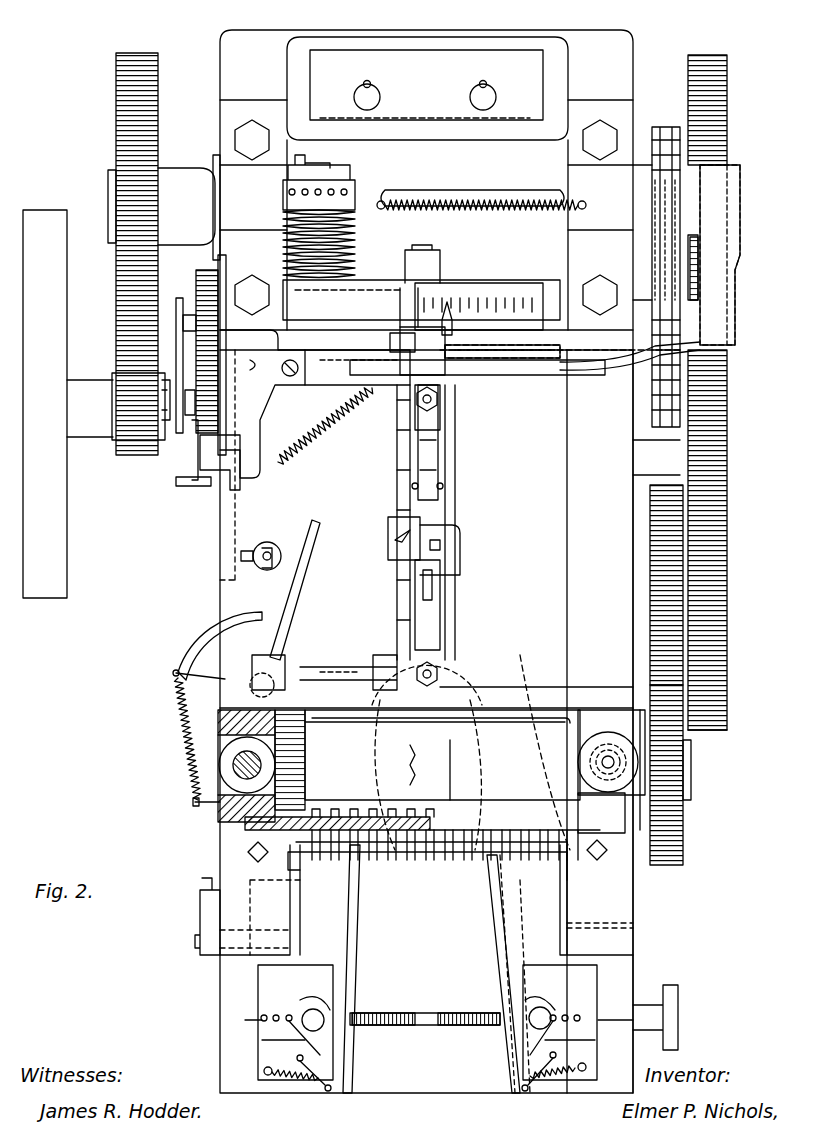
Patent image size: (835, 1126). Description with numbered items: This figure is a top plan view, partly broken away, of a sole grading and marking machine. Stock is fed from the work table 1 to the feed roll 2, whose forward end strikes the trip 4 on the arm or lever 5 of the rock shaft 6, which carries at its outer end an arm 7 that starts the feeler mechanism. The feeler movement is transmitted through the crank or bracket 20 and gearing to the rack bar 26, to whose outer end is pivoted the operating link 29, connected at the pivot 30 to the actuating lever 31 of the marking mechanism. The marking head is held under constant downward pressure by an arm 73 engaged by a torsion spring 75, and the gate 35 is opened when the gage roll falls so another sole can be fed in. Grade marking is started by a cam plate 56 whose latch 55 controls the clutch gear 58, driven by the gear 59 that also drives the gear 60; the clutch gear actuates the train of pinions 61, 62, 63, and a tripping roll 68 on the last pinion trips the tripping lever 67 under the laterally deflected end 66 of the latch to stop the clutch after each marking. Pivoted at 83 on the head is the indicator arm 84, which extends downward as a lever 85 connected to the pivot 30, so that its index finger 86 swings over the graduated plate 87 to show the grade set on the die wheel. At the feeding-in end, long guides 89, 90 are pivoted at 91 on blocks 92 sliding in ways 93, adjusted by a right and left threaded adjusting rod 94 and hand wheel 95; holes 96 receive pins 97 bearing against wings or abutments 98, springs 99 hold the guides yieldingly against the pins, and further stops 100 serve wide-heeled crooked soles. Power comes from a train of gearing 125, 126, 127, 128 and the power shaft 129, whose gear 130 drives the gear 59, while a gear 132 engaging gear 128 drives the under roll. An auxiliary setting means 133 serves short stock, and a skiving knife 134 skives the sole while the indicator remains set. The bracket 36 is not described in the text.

The work table 1 is at (426, 561).
The feed roll 2 is at (425, 757).
The trip 4 is at (424, 546).
The arm or lever 5 is at (398, 487).
The rock shaft 6 is at (327, 668).
The arm 7 is at (262, 595).
The crank or bracket 20 is at (355, 415).
The rack bar 26 is at (652, 240).
The operating link 29 is at (570, 362).
The pivot 30 is at (470, 378).
The actuating lever 31 is at (392, 345).
The gate 35 is at (575, 855).
The bracket 36 is at (248, 950).
The latch 55 is at (208, 490).
The cam plate 56 is at (225, 492).
The clutch gear 58 is at (192, 445).
The gear 59 is at (140, 450).
The gear 60 is at (118, 128).
The pinion 61 is at (200, 432).
The pinion 62 is at (195, 368).
The pinion 63 is at (198, 280).
The laterally deflected end 66 is at (190, 488).
The tripping lever 67 is at (178, 318).
The tripping roll 68 is at (222, 295).
The arm 73 is at (372, 275).
The torsion spring 75 is at (283, 222).
The pivot 83 is at (414, 388).
The indicator arm 84 is at (410, 325).
The lever 85 is at (488, 372).
The index finger 86 is at (450, 312).
The graduated plate 87 is at (530, 292).
The guide 89 is at (350, 1075).
The guide 90 is at (500, 1068).
The pivot 91 is at (313, 1008).
The block 92 is at (260, 983).
The ways 93 is at (430, 1021).
The adjusting rod 94 is at (450, 1012).
The hand wheel 95 is at (671, 985).
The holes 96 is at (287, 1024).
The pins 97 is at (278, 1014).
The wings or abutments 98 is at (262, 1040).
The springs 99 is at (292, 1085).
The stops 100 is at (312, 1082).
The gear 125 is at (683, 847).
The gear 126 is at (665, 485).
The gear 127 is at (712, 732).
The gear 128 is at (727, 415).
The power shaft 129 is at (700, 440).
The gear 130 is at (62, 575).
The gear 132 is at (718, 118).
The auxiliary setting means 133 is at (205, 642).
The skiving knife 134 is at (412, 133).